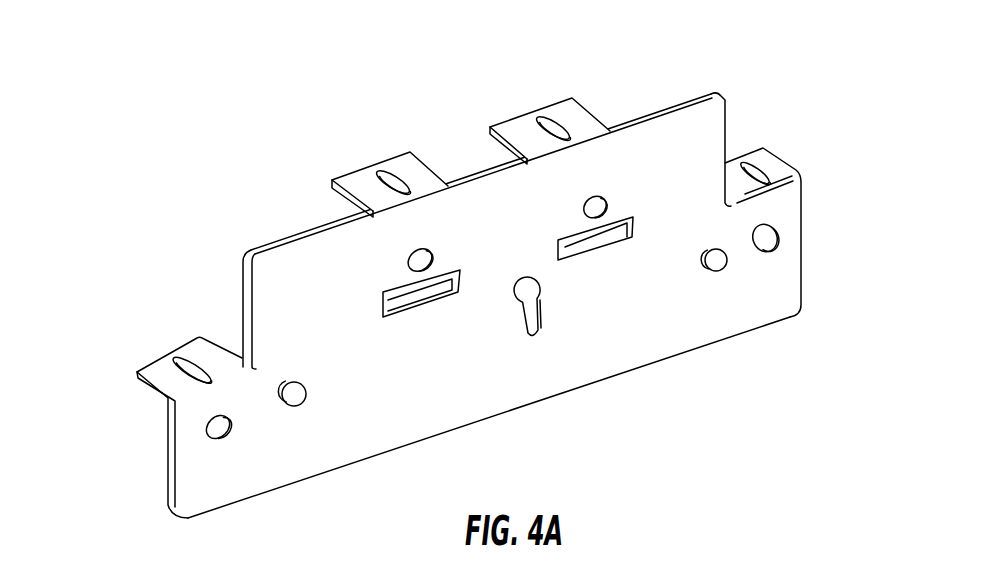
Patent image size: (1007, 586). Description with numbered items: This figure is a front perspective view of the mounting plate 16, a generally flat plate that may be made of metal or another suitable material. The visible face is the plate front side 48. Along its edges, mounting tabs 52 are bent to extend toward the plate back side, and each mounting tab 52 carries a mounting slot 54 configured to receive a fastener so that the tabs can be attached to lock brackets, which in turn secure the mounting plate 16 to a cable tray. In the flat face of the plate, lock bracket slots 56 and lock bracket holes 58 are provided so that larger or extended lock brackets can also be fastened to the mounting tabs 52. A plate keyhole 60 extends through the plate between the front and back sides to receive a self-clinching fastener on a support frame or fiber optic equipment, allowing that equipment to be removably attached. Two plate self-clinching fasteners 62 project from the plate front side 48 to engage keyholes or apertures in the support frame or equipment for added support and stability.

The mounting plate 16 is at (481, 272).
The plate front side 48 is at (770, 292).
The mounting tabs 52 is at (137, 373).
The mounting slots 54 is at (185, 358).
The lock bracket slots 56 is at (397, 315).
The lock bracket holes 58 is at (205, 432).
The plate keyhole 60 is at (537, 310).
The plate self-clinching fasteners 62 is at (290, 404).